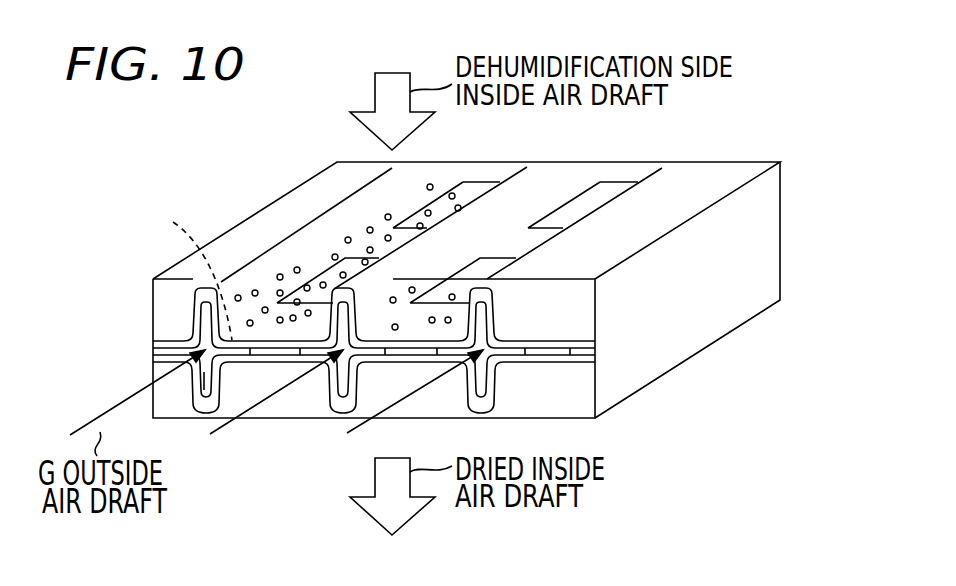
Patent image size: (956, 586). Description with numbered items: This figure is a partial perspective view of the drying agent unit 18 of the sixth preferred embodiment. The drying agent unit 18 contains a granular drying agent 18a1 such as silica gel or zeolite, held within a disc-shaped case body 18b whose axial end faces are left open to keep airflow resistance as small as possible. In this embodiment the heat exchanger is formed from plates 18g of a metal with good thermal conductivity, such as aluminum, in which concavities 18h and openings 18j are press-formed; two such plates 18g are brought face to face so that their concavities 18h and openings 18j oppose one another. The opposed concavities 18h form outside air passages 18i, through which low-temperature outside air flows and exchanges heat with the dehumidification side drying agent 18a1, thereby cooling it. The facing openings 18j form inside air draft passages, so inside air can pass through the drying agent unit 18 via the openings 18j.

The drying agent unit 18 is at (713, 161).
The case body 18b is at (752, 161).
The openings 18j is at (602, 182).
The dehumidification side drying agent 18a1 is at (279, 275).
The concavities 18h is at (193, 315).
The plates 18g is at (178, 341).
The outside air passages 18i is at (208, 372).